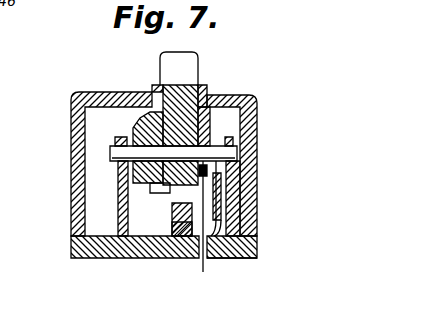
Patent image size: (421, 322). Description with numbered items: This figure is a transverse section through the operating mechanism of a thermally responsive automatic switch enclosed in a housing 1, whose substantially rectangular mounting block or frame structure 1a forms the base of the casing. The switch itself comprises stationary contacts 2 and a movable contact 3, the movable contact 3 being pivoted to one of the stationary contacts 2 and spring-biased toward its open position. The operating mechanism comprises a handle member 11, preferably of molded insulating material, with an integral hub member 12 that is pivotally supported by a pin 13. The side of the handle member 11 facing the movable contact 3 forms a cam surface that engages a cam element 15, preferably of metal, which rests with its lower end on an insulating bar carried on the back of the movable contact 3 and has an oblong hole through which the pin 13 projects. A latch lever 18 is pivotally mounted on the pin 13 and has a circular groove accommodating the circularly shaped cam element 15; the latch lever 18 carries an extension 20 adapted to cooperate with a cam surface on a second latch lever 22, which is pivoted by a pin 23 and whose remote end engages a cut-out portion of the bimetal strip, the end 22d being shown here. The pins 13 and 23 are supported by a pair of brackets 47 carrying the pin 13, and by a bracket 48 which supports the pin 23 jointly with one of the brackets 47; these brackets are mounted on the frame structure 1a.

The housing 1 is at (252, 81).
The frame structure 1a is at (80, 247).
The stationary contacts 2 is at (172, 230).
The movable contact 3 is at (172, 210).
The handle member 11 is at (189, 67).
The hub member 12 is at (141, 128).
The pin 13 is at (110, 152).
The cam element 15 is at (200, 133).
The latch lever 18 is at (207, 90).
The extension 20 is at (196, 264).
The second latch lever 22 is at (219, 190).
The blade end 22d is at (237, 230).
The pin 23 is at (233, 173).
The brackets 47 is at (118, 212).
The bracket 48 is at (227, 258).